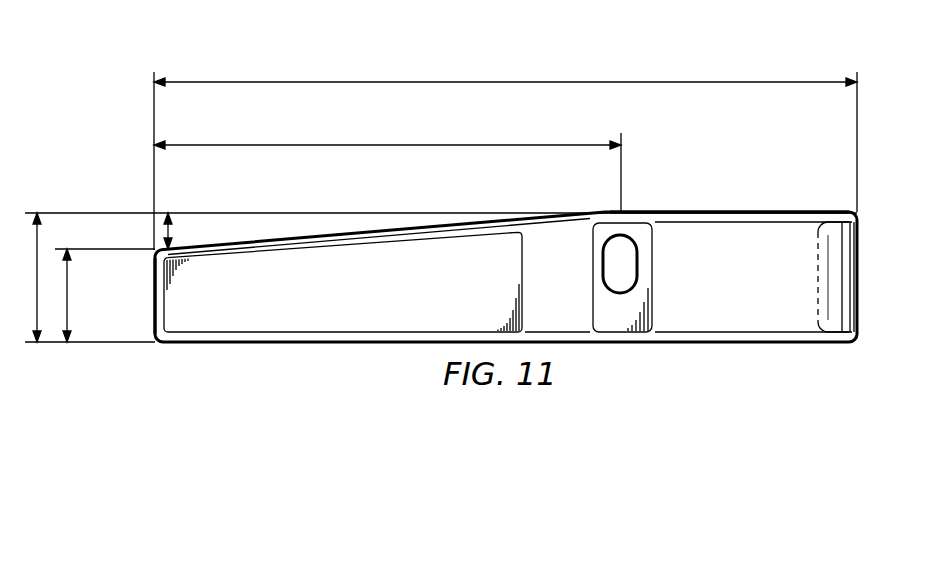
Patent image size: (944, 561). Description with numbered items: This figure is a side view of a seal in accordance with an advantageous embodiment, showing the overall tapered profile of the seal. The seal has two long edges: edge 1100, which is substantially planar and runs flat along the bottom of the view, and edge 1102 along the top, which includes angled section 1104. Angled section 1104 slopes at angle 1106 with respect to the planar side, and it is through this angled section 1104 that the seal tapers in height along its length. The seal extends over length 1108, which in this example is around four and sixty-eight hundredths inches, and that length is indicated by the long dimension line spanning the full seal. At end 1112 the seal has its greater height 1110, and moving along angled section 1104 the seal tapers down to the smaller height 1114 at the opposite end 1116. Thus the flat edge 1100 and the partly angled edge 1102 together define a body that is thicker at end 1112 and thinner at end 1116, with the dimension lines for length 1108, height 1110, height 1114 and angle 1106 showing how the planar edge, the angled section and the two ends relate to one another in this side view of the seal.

The edge 1100 is at (725, 343).
The edge 1102 is at (725, 212).
The angled section 1104 is at (390, 145).
The angle 1106 is at (172, 230).
The length 1108 is at (505, 82).
The height 1110 is at (40, 239).
The end 1112 is at (857, 343).
The height 1114 is at (70, 290).
The end 1116 is at (154, 305).